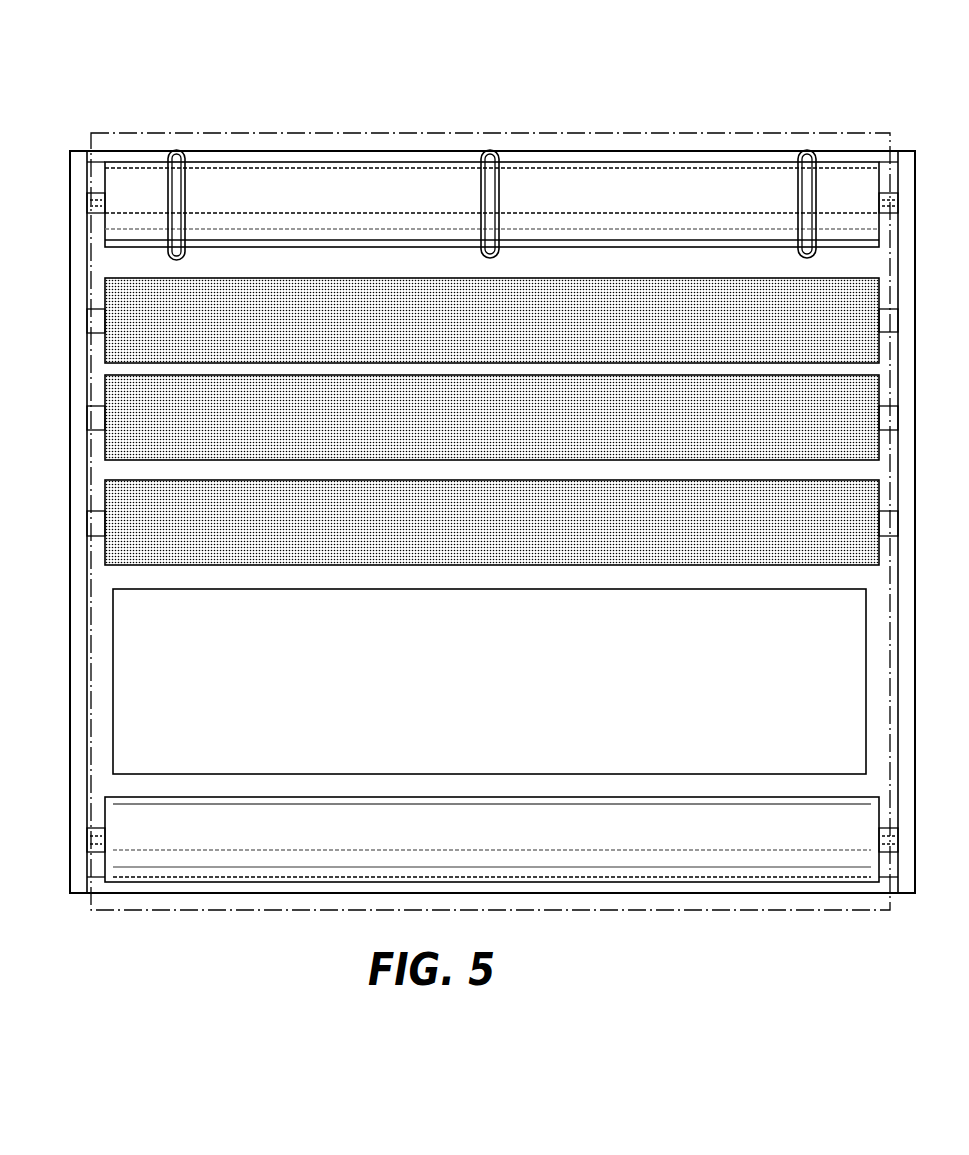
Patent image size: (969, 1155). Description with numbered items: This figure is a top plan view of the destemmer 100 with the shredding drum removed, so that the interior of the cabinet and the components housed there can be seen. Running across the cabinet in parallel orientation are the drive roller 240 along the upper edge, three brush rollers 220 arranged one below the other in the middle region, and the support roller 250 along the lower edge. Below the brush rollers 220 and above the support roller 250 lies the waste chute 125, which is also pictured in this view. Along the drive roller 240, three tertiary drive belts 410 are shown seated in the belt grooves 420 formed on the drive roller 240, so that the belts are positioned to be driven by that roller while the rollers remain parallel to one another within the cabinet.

The destemmer 100 is at (168, 42).
The waste chute 125 is at (133, 680).
The brush rollers 220 is at (118, 300).
The drive roller 240 is at (112, 178).
The support roller 250 is at (133, 825).
The tertiary drive belts 410 is at (167, 160).
The belt grooves 420 is at (192, 178).